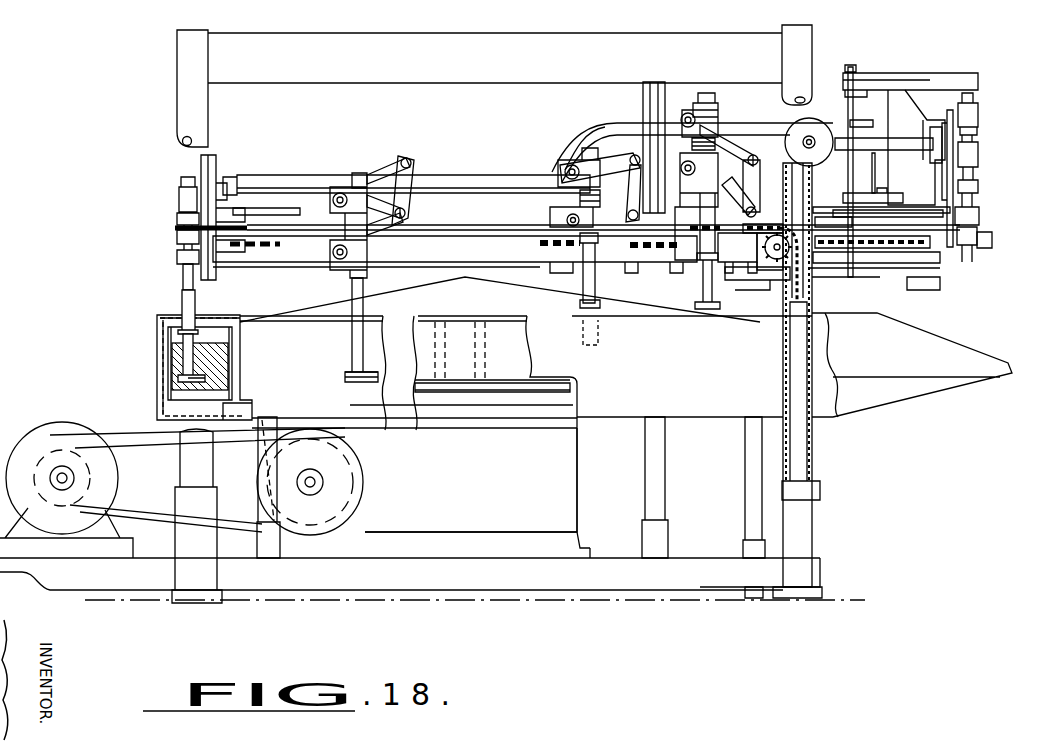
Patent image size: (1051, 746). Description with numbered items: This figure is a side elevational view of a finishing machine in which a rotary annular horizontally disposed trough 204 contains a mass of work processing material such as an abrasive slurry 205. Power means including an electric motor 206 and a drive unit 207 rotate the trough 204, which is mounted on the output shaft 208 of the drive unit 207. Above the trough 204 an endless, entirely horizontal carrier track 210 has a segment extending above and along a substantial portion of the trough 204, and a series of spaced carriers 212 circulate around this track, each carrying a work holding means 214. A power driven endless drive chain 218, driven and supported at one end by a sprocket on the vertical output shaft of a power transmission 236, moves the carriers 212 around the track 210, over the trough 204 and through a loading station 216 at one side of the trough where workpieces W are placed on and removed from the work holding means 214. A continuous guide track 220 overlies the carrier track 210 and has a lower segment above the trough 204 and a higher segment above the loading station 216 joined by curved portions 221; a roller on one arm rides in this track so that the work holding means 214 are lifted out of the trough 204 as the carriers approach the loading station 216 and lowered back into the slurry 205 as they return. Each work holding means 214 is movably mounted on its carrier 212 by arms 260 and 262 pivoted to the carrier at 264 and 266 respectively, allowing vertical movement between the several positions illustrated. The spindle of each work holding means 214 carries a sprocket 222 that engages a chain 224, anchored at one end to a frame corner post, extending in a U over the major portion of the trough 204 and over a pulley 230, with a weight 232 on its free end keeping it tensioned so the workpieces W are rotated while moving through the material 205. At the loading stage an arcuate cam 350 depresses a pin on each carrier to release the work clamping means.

The trough 204 is at (217, 340).
The abrasive slurry 205 is at (228, 376).
The electric motor 206 is at (48, 427).
The drive unit 207 is at (535, 489).
The output shaft 208 is at (458, 400).
The carrier track 210 is at (493, 207).
The carriers 212 is at (612, 258).
The work holding means 214 is at (368, 305).
The loading station 216 is at (983, 242).
The drive chain 218 is at (888, 245).
The track 220 is at (322, 133).
The curved portions 221 is at (598, 138).
The sprocket 222 is at (567, 193).
The chain 224 is at (248, 228).
The pulley 230 is at (773, 273).
The weight 232 is at (803, 450).
The power transmission 236 is at (833, 125).
The arm 260 is at (393, 197).
The arm 262 is at (405, 157).
The pivot 264 is at (387, 213).
The pivot 266 is at (410, 177).
The arcuate cam 350 is at (927, 93).
The workpieces W is at (350, 367).